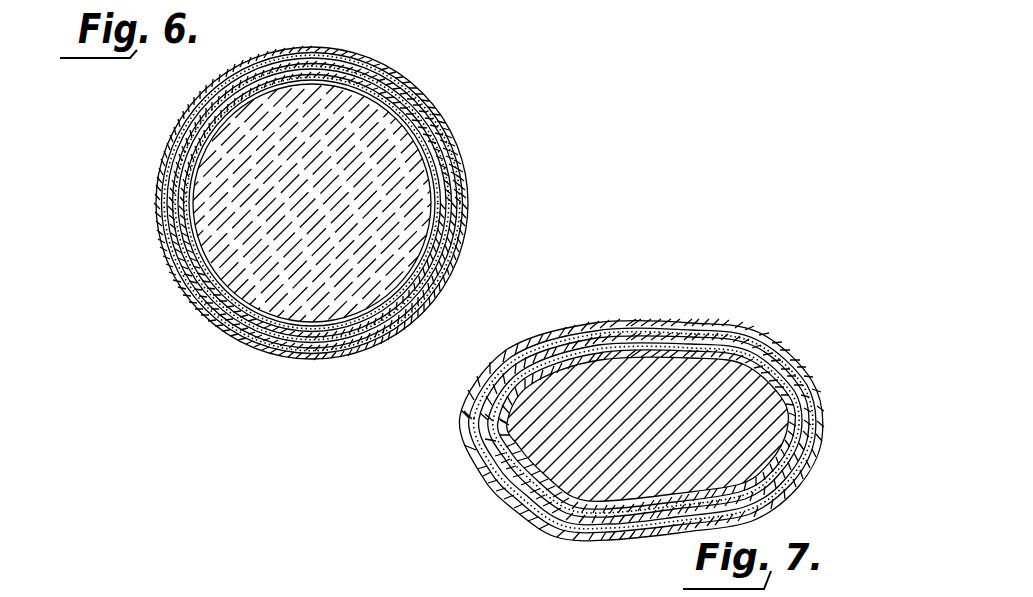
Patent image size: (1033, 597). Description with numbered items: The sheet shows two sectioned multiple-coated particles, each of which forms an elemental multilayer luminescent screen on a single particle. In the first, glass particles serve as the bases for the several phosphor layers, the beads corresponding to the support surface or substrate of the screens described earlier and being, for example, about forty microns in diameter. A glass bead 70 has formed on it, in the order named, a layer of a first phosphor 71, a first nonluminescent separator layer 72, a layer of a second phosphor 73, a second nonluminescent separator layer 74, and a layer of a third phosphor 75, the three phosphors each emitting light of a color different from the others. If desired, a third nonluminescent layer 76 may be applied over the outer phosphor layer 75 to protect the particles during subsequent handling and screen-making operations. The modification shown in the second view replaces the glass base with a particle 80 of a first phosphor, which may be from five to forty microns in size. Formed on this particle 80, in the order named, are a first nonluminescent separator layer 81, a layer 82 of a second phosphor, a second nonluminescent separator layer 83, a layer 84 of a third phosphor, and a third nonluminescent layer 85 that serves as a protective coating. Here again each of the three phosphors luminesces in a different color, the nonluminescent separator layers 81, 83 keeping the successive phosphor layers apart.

In FIG. 6, the glass bead 70 is at (322, 211).
In FIG. 6, the layer of a first phosphor 71 is at (200, 150).
In FIG. 6, the first nonluminescent separator layer 72 is at (184, 180).
In FIG. 6, the layer of a second phosphor 73 is at (176, 205).
In FIG. 6, the second nonluminescent separator layer 74 is at (173, 240).
In FIG. 6, the layer of a third phosphor 75 is at (176, 270).
In FIG. 6, the third nonluminescent layer 76 is at (188, 300).
In FIG. 7, the particle of a first phosphor 80 is at (656, 442).
In FIG. 7, the first nonluminescent separator layer 81 is at (553, 498).
In FIG. 7, the layer of a second phosphor 82 is at (556, 511).
In FIG. 7, the second nonluminescent separator layer 83 is at (551, 518).
In FIG. 7, the layer of a third phosphor 84 is at (572, 530).
In FIG. 7, the third nonluminescent layer 85 is at (607, 533).